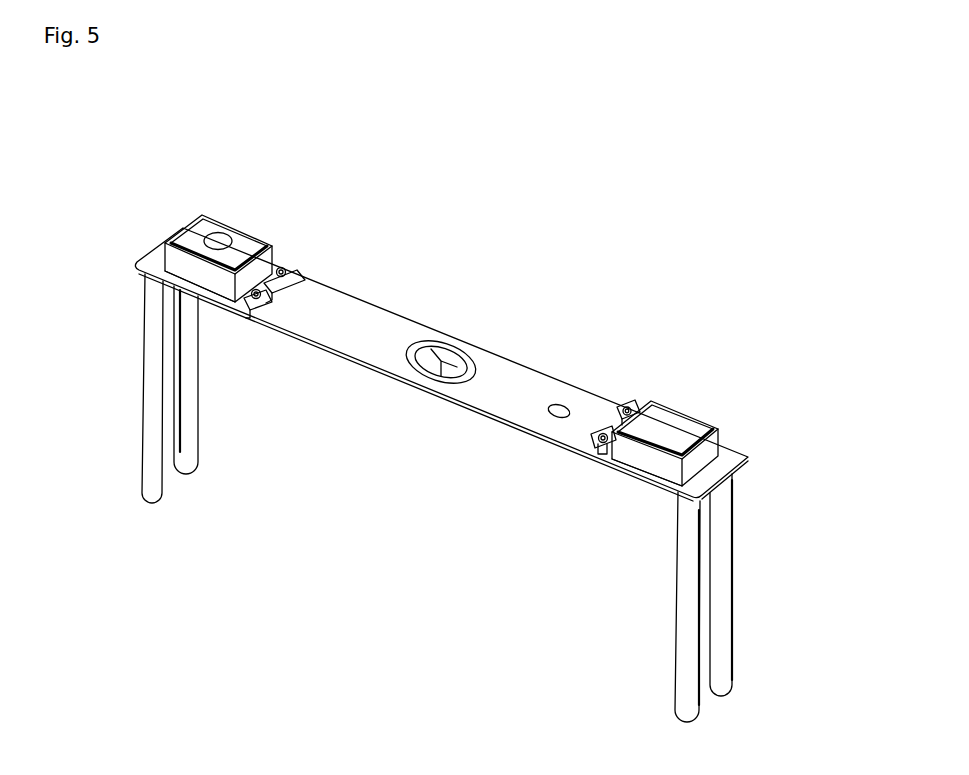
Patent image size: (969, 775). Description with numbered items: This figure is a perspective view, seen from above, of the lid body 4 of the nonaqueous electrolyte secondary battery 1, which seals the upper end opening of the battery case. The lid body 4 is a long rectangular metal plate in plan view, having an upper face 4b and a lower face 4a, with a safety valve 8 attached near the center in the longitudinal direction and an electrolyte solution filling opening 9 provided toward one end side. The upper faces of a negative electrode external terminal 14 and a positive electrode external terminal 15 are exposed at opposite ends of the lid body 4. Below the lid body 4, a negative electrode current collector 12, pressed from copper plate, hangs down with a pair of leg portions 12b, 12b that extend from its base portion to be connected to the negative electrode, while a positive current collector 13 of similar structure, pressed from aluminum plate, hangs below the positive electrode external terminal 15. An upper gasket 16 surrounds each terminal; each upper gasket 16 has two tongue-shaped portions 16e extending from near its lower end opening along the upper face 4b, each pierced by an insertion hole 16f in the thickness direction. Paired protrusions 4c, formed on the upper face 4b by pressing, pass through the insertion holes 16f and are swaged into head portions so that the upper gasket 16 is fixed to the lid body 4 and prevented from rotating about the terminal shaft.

The nonaqueous electrolyte secondary battery 1 is at (663, 232).
The lid body 4 is at (413, 322).
The lower face 4a is at (132, 284).
The upper face 4b is at (143, 253).
The protrusions 4c is at (283, 270).
The safety valve 8 is at (433, 368).
The electrolyte solution filling opening 9 is at (556, 414).
The negative electrode current collector 12 is at (168, 404).
The leg portions 12b is at (190, 446).
The positive current collector 13 is at (747, 645).
The negative electrode external terminal 14 is at (245, 238).
The positive electrode external terminal 15 is at (688, 420).
The upper gasket 16 is at (195, 272).
The tongue-shaped portions 16e is at (300, 277).
The insertion hole 16f is at (304, 285).